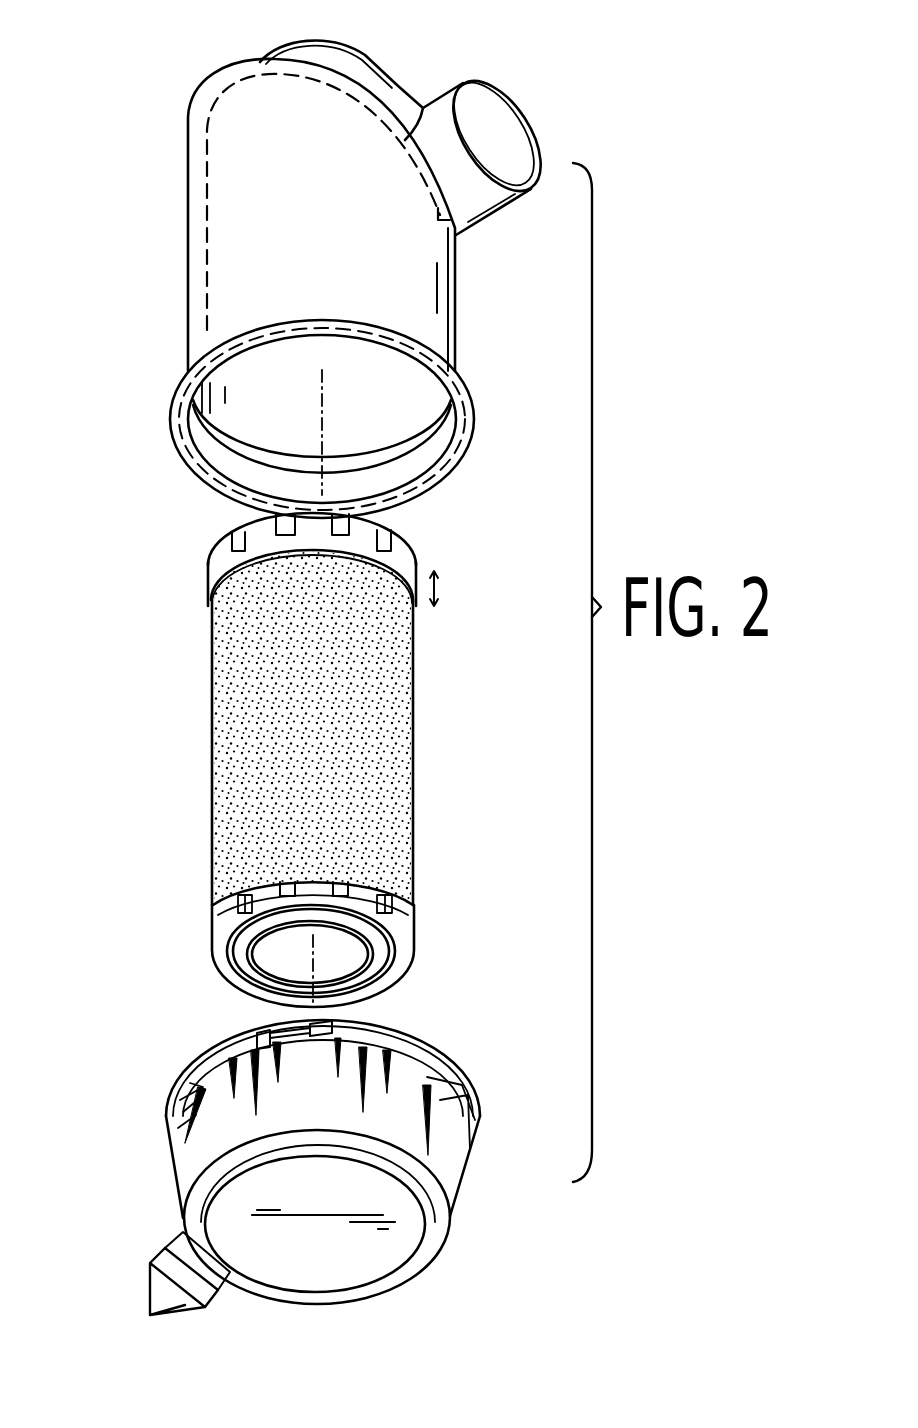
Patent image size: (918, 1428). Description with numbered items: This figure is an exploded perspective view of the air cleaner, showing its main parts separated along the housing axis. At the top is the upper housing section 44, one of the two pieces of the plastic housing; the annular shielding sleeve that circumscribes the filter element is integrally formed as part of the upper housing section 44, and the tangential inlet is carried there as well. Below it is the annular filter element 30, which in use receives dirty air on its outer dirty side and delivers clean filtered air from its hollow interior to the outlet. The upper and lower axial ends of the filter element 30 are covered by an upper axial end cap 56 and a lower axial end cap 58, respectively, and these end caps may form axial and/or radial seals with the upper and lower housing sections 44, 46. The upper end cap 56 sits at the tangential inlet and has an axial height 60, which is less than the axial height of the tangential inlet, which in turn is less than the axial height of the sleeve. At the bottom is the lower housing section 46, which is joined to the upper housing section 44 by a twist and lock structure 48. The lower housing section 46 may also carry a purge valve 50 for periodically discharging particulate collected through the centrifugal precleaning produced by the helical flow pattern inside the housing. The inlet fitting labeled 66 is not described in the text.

The annular filter element 30 is at (240, 797).
The upper housing section 44 is at (188, 248).
The lower housing section 46 is at (180, 1145).
The twist and lock structure 48 is at (288, 1013).
The purge valve 50 is at (160, 1285).
The upper axial end cap 56 is at (218, 548).
The lower axial end cap 58 is at (215, 910).
The axial height 60 is at (440, 590).
The inlet 66 is at (378, 102).